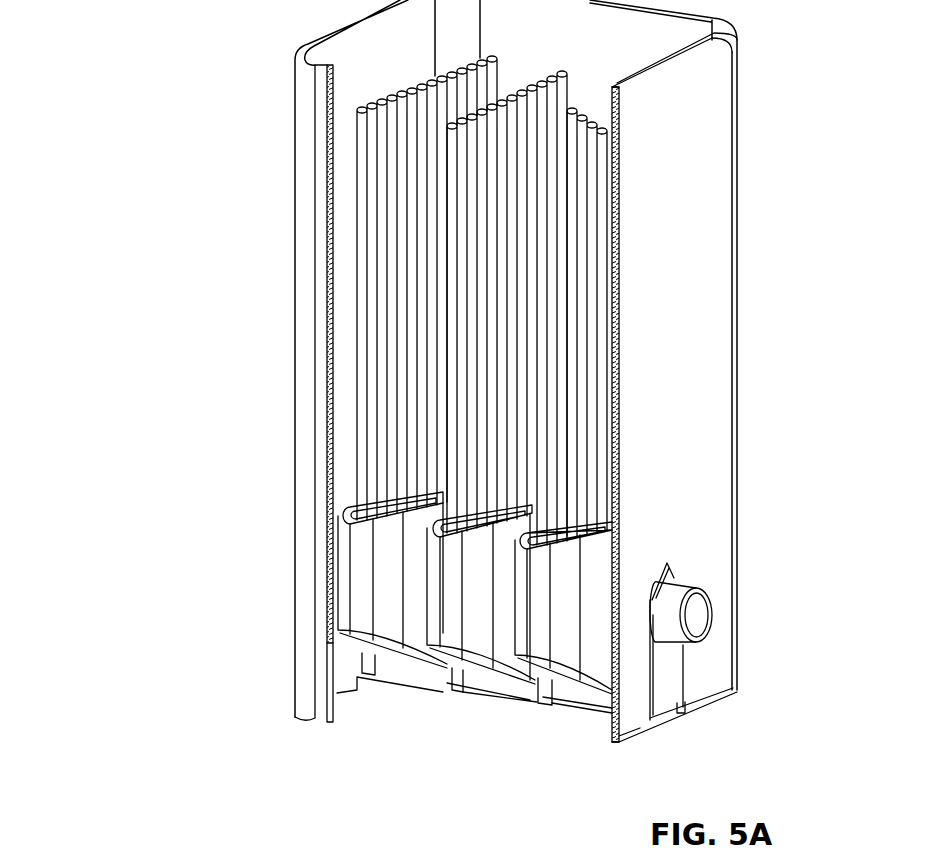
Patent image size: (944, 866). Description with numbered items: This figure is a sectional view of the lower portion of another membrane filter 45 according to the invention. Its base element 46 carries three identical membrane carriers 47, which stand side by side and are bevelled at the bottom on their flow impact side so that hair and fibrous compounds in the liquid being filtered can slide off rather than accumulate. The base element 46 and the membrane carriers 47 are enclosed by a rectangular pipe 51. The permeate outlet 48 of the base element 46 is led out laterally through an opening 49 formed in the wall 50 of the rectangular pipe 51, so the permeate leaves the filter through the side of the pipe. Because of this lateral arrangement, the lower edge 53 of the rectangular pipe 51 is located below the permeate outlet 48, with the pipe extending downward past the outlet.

The membrane filter 45 is at (172, 173).
The base element 46 is at (240, 587).
The membrane carriers 47 is at (363, 608).
The permeate outlet 48 is at (693, 615).
The opening 49 is at (668, 713).
The wall 50 is at (613, 722).
The rectangular pipe 51 is at (698, 287).
The lower edge 53 is at (723, 698).